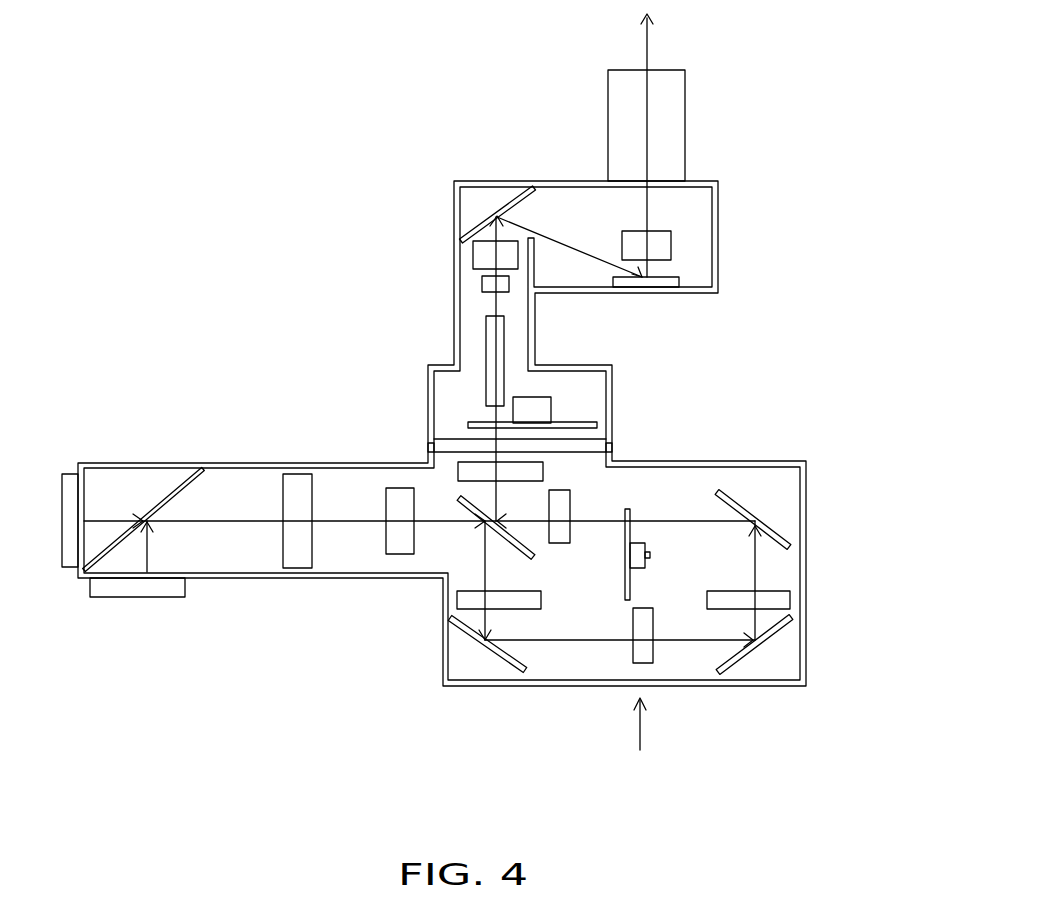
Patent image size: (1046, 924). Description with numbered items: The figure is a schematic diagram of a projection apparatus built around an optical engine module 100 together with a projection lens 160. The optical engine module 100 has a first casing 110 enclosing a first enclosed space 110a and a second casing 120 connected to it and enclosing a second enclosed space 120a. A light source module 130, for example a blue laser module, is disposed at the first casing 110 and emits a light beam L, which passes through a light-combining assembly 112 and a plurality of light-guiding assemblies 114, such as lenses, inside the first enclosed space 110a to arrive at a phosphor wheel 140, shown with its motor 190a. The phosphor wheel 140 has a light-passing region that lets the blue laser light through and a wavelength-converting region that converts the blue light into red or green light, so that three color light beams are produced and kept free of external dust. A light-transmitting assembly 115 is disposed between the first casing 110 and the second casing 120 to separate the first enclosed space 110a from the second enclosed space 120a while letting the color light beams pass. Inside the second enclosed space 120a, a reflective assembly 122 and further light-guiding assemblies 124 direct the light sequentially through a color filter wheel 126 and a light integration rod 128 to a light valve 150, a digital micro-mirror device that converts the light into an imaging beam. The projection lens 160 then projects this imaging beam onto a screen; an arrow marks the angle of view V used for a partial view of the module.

The optical engine module 100 is at (838, 382).
The first casing 110 is at (502, 687).
The first enclosed space 110a is at (445, 550).
The light-combining assembly 112 is at (180, 483).
The light-guiding assemblies 114 is at (295, 560).
The light-transmitting assembly 115 is at (449, 443).
The second casing 120 is at (718, 205).
The second enclosed space 120a is at (467, 394).
The reflective assembly 122 is at (508, 203).
The light-guiding assemblies 124 is at (477, 255).
The color filter wheel 126 is at (587, 421).
The light integration rod 128 is at (502, 342).
The light source module 130 is at (68, 568).
The phosphor wheel 140 is at (612, 587).
The light valve 150 is at (665, 287).
The projection lens 160 is at (673, 122).
The motor 190a is at (639, 563).
The light beam L is at (121, 525).
The angle of view V is at (640, 740).